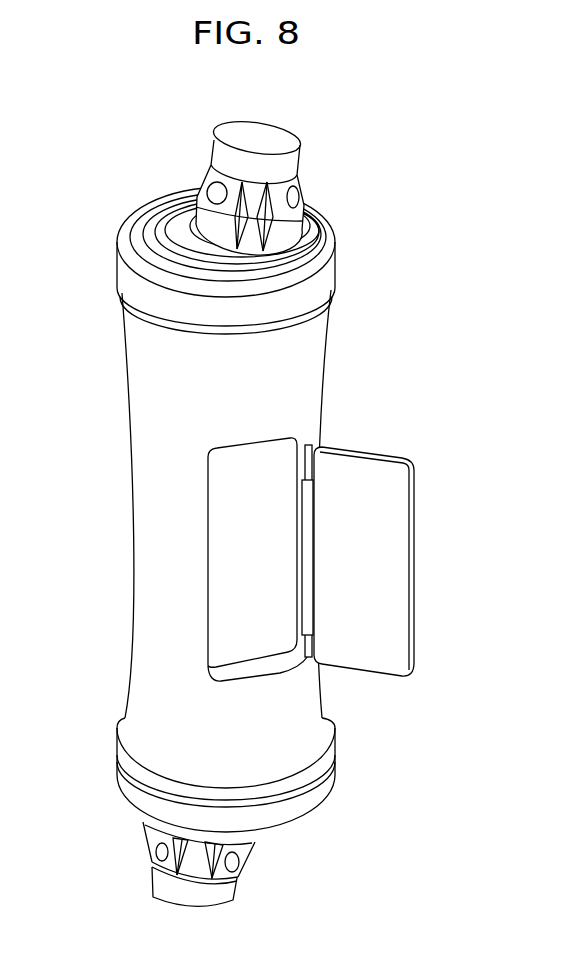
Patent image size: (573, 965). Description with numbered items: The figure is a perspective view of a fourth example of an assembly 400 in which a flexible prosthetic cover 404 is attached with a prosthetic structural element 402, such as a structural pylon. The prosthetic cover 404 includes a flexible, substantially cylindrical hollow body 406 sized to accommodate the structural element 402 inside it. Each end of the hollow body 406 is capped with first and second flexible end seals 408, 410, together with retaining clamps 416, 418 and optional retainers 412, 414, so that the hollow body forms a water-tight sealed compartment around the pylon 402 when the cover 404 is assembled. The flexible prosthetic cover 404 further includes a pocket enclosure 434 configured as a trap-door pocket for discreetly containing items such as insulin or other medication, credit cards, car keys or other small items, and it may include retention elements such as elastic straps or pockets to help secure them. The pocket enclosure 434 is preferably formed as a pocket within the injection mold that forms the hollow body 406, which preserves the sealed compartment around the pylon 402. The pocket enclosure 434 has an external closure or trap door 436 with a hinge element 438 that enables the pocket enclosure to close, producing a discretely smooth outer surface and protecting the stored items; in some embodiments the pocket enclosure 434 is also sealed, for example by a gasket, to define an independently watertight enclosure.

The assembly 400 is at (273, 477).
The prosthetic structural element 402 is at (216, 171).
The flexible prosthetic cover 404 is at (273, 500).
The hollow body 406 is at (134, 491).
The first flexible end seal 408 is at (320, 215).
The second flexible end seal 410 is at (251, 869).
The retainer 412 is at (125, 269).
The retainer 414 is at (130, 787).
The retaining clamp 416 is at (201, 183).
The retaining clamp 418 is at (250, 855).
The pocket enclosure 434 is at (230, 604).
The trap door 436 is at (414, 560).
The hinge element 438 is at (313, 517).